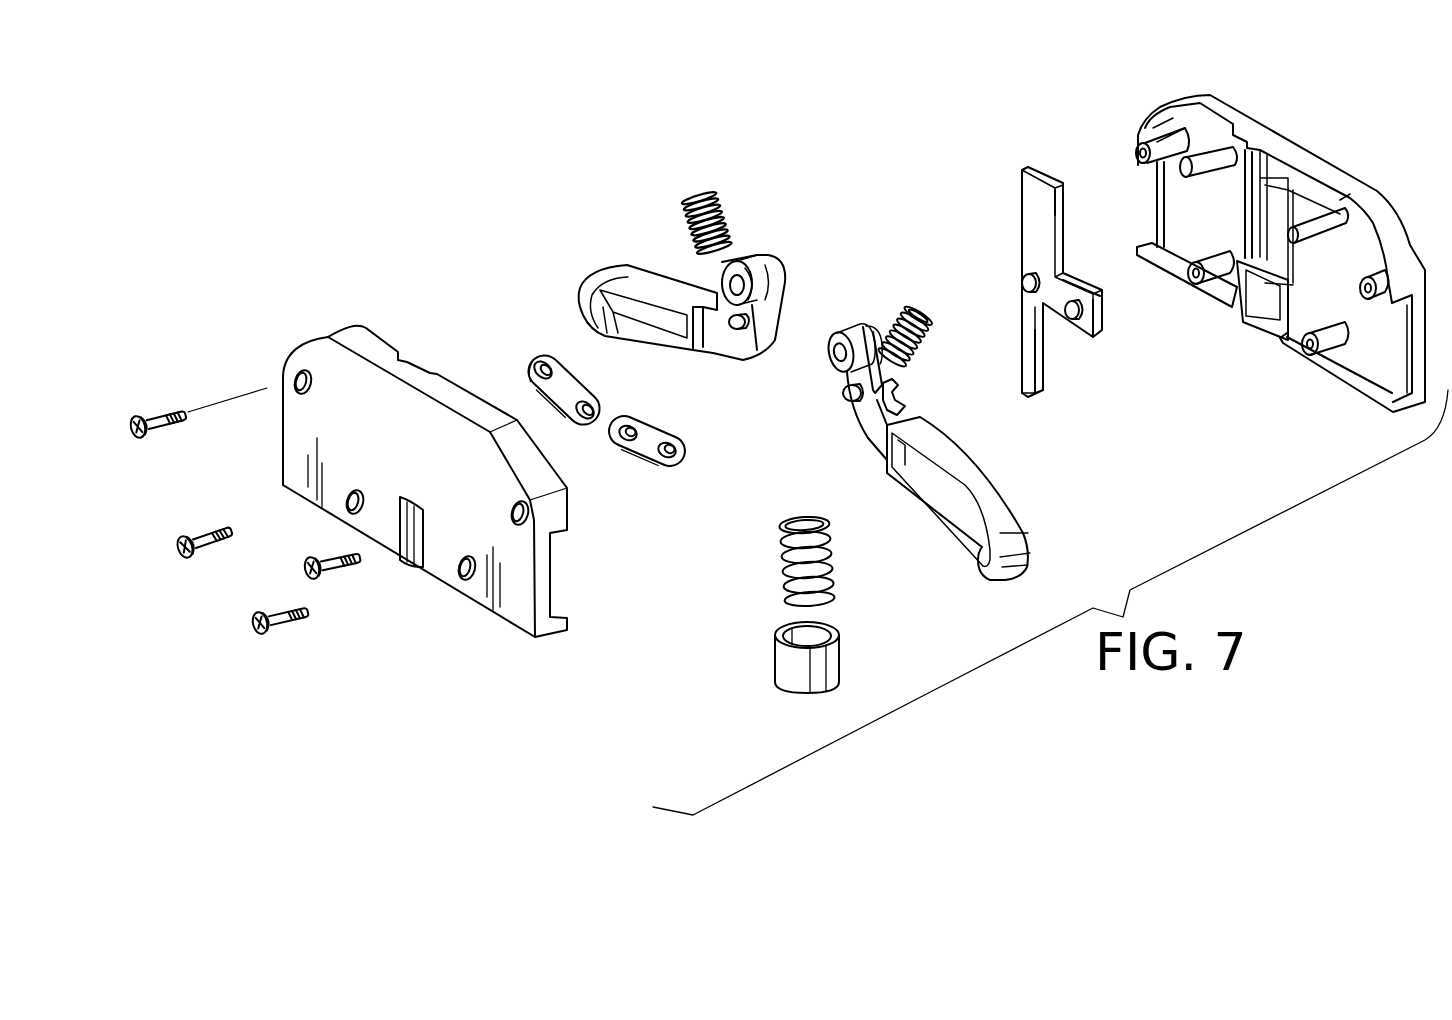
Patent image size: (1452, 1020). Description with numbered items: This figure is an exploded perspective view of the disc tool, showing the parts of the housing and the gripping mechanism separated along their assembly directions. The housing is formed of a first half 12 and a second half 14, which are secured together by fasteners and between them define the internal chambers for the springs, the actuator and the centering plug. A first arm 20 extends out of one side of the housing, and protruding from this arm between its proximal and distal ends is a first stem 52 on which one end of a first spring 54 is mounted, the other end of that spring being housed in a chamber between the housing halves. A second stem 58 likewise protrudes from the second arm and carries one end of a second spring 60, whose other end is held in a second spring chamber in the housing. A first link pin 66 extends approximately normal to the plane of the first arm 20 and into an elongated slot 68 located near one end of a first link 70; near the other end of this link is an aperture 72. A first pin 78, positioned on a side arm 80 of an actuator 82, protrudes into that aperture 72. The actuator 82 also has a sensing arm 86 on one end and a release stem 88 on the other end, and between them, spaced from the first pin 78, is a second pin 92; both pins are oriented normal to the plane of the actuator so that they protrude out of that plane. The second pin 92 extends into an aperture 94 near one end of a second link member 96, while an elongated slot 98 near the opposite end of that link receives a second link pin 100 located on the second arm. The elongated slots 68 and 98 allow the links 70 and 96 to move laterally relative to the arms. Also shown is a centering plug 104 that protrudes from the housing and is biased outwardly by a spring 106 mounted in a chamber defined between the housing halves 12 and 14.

The first half 12 is at (443, 568).
The second half 14 is at (1372, 383).
The first arm 20 is at (907, 452).
The first stem 52 is at (900, 387).
The first spring 54 is at (917, 307).
The second stem 58 is at (682, 315).
The second spring 60 is at (727, 217).
The first link pin 66 is at (838, 397).
The elongated slot 68 is at (667, 455).
The first link 70 is at (648, 447).
The aperture 72 is at (628, 447).
The first pin 78 is at (1070, 323).
The side arm 80 is at (1087, 302).
The actuator 82 is at (1062, 271).
The sensing arm 86 is at (1028, 355).
The release stem 88 is at (1030, 180).
The second pin 92 is at (1023, 280).
The aperture 94 is at (554, 397).
The second link member 96 is at (578, 380).
The elongated slot 98 is at (537, 370).
The second link pin 100 is at (733, 333).
The centering plug 104 is at (783, 663).
The spring 106 is at (782, 557).